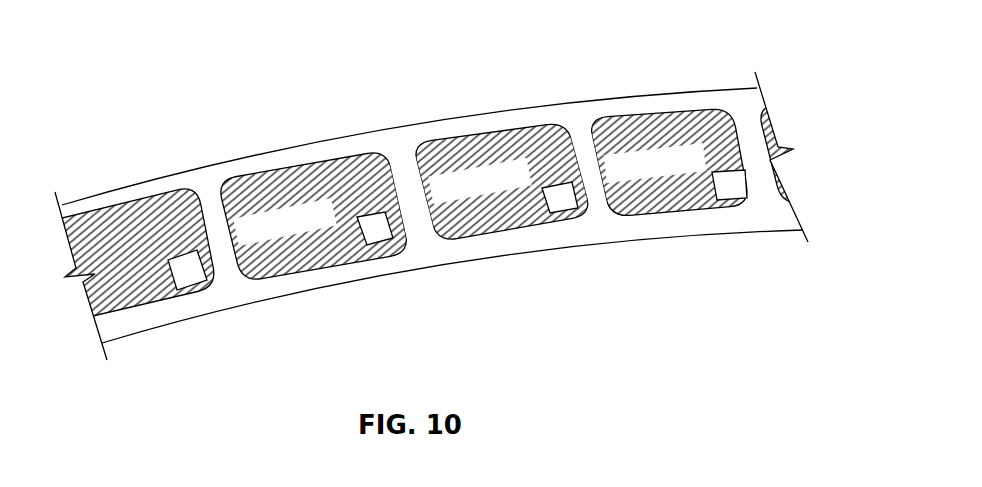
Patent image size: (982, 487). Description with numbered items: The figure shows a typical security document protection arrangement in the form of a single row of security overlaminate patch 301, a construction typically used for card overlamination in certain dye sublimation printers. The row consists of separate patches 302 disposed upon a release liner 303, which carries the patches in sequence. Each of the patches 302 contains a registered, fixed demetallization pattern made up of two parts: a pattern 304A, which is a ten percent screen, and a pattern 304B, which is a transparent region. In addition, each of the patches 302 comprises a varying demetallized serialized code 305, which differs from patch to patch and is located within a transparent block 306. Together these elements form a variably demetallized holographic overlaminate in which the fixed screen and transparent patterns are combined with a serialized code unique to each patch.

The security overlaminate patch 301 is at (458, 187).
The patches 302 is at (292, 260).
The release liner 303 is at (658, 100).
The pattern 304A is at (347, 162).
The pattern 304B is at (192, 272).
The varying demetallized serialized code 305 is at (443, 238).
The transparent block 306 is at (270, 194).